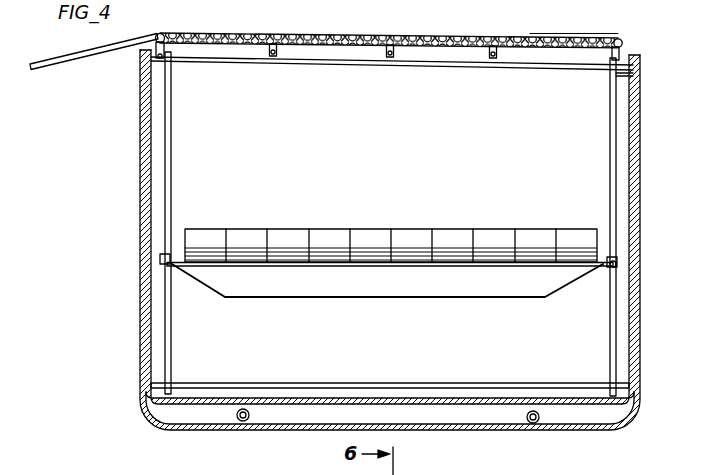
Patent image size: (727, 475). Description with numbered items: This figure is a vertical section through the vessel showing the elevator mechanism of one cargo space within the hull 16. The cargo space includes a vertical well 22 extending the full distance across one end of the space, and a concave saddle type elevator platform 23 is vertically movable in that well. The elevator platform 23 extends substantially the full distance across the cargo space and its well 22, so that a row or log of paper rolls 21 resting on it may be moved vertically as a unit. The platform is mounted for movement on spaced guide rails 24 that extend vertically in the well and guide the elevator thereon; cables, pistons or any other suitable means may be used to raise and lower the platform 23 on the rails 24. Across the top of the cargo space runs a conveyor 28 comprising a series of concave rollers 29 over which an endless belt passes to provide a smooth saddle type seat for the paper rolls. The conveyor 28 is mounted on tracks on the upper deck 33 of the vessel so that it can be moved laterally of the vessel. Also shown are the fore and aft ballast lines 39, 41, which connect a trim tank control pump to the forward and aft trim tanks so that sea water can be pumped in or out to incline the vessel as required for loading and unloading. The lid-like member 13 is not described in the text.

The lid 13 is at (57, 68).
The hull 16 is at (641, 232).
The paper rolls 21 is at (353, 239).
The vertical well 22 is at (553, 166).
The elevator platform 23 is at (403, 287).
The guide rails 24 is at (170, 173).
The conveyor 28 is at (341, 24).
The concave rollers 29 is at (416, 33).
The upper deck 33 is at (313, 62).
The fore ballast line 39 is at (538, 37).
The aft ballast line 41 is at (237, 421).